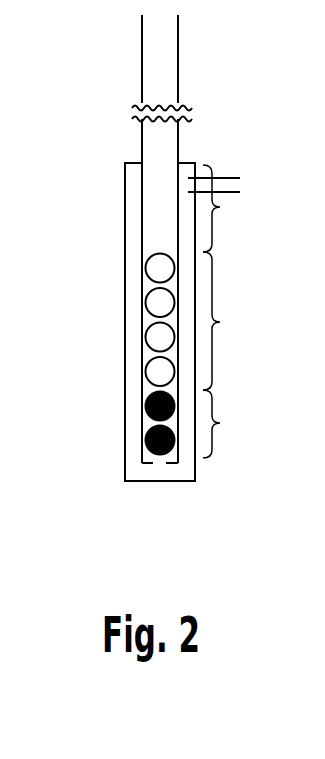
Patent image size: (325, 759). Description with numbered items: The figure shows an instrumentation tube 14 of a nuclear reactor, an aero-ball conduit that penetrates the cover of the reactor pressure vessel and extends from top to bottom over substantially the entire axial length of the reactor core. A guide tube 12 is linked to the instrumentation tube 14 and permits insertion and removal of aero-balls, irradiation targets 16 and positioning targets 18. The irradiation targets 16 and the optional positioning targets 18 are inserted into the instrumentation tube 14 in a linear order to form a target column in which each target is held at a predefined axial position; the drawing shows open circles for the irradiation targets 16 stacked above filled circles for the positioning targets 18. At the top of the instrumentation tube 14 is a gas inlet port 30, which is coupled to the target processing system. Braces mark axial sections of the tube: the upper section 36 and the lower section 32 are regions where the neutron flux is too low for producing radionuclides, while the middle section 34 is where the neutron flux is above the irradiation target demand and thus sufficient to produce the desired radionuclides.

The guide tube 12 is at (165, 52).
The instrumentation tube 14 is at (109, 187).
The irradiation targets 16 is at (145, 296).
The positioning targets 18 is at (145, 405).
The gas inlet port 30 is at (226, 178).
The section of low neutron flux 32 is at (231, 424).
The section of sufficient neutron flux 34 is at (231, 321).
The section of low neutron flux 36 is at (230, 208).